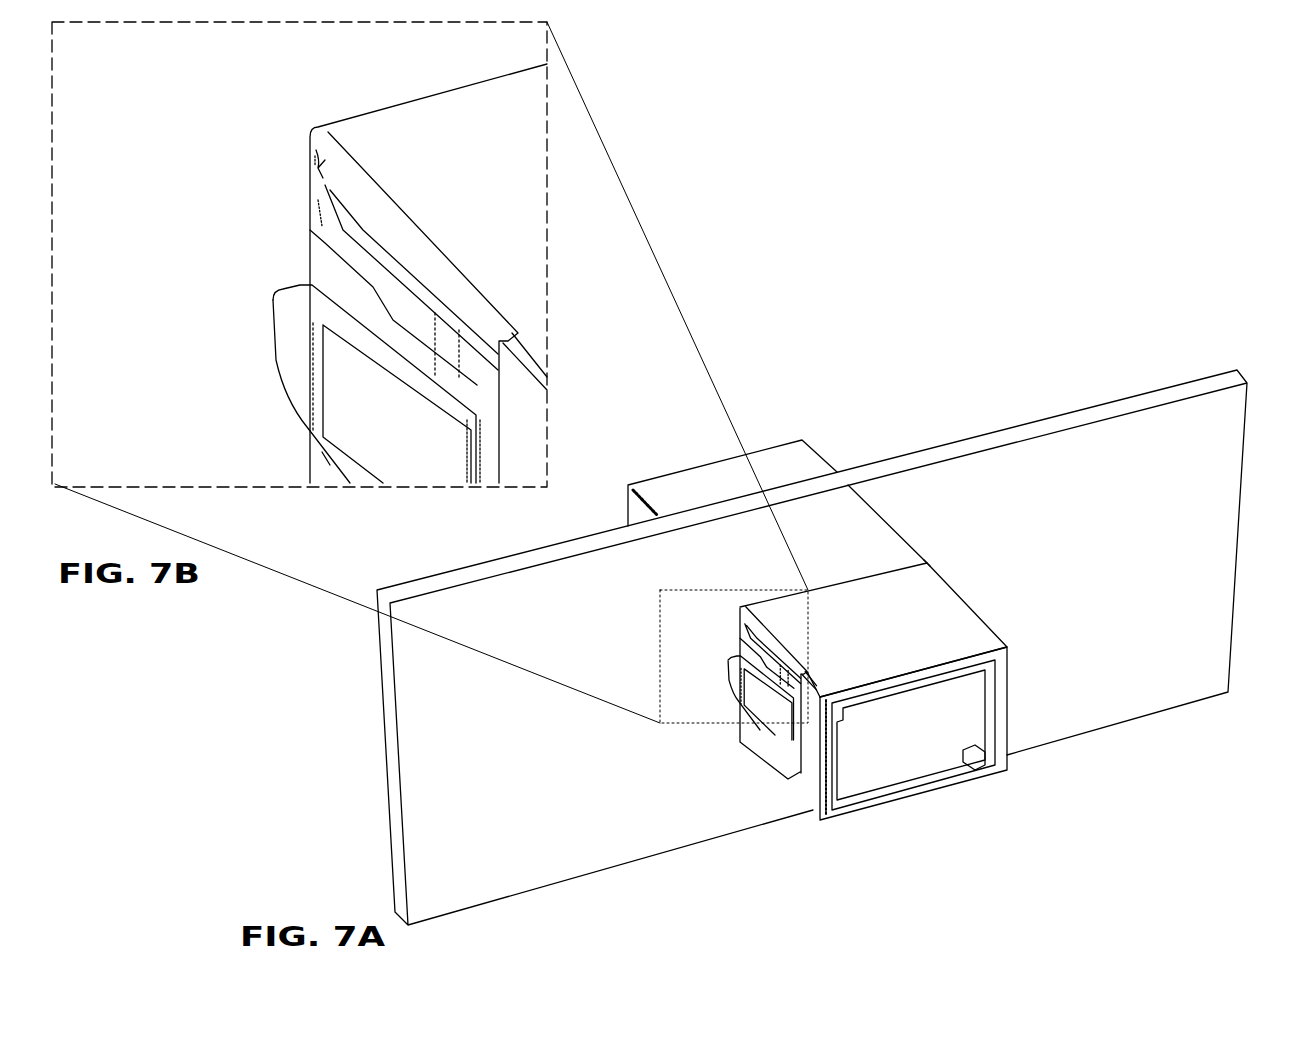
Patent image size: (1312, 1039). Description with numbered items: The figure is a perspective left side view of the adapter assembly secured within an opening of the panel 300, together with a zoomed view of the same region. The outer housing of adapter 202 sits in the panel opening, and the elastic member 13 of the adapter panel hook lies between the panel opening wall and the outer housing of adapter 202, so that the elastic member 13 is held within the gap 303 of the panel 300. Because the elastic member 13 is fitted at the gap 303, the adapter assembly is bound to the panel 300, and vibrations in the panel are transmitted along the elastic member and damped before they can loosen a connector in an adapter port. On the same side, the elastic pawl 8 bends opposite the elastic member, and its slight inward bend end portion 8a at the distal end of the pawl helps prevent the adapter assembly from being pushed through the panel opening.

In FIG. 7A, the panel 300 is at (812, 647).
In FIG. 7B, the panel 300 is at (225, 103).
In FIG. 7A, the gap 303 is at (929, 561).
In FIG. 7B, the gap 303 is at (334, 168).
In FIG. 7A, the elastic member 13 is at (737, 633).
In FIG. 7B, the elastic member 13 is at (325, 211).
In FIG. 7A, the elastic pawl 8 is at (772, 693).
In FIG. 7B, the elastic pawl 8 is at (388, 440).
In FIG. 7B, the inward bend end portion 8a is at (291, 357).
In FIG. 7A, the outer housing of adapter 202 is at (908, 637).
In FIG. 7B, the outer housing of adapter 202 is at (436, 307).